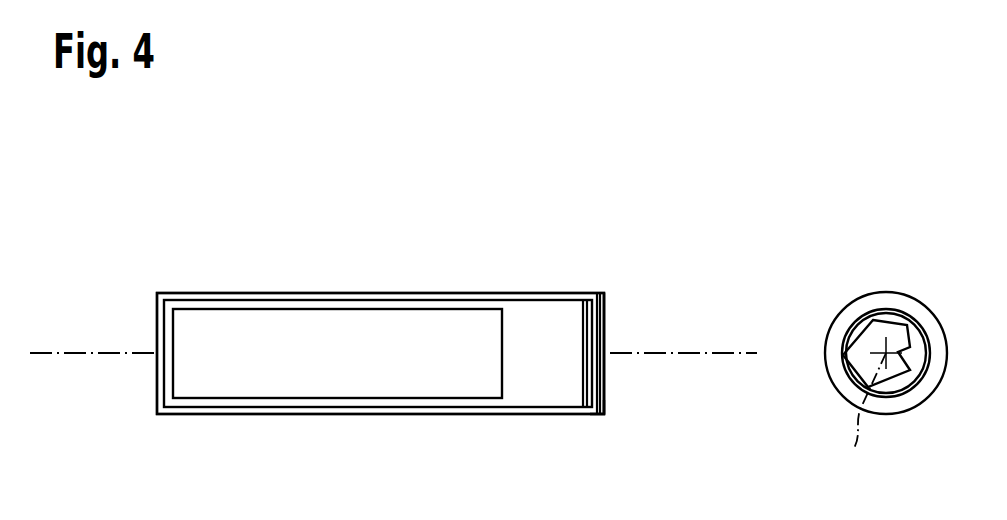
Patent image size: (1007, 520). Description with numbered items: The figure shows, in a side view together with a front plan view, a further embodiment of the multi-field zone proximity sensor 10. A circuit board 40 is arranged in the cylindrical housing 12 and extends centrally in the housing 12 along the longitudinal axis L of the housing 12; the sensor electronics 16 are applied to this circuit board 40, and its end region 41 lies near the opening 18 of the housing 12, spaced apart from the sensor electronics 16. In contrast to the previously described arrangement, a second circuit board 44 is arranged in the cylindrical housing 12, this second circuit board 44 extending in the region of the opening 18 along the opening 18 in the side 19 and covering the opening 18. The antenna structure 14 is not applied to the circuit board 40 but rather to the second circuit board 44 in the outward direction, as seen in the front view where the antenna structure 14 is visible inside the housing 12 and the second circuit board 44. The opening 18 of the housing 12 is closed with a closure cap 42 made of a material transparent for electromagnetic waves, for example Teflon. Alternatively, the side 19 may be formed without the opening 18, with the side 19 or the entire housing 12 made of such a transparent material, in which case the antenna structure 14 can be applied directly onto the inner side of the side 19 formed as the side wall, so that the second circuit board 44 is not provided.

The multi-field zone proximity sensor 10 is at (316, 205).
The cylindrical housing 12 is at (240, 293).
The antenna structure 14 is at (875, 340).
The sensor electronics 16 is at (395, 385).
The opening 18 is at (603, 415).
The side 19 is at (604, 305).
The circuit board 40 is at (325, 408).
The end region 41 is at (518, 322).
The closure cap 42 is at (602, 330).
The second circuit board 44 is at (585, 322).
The longitudinal axis L is at (717, 355).